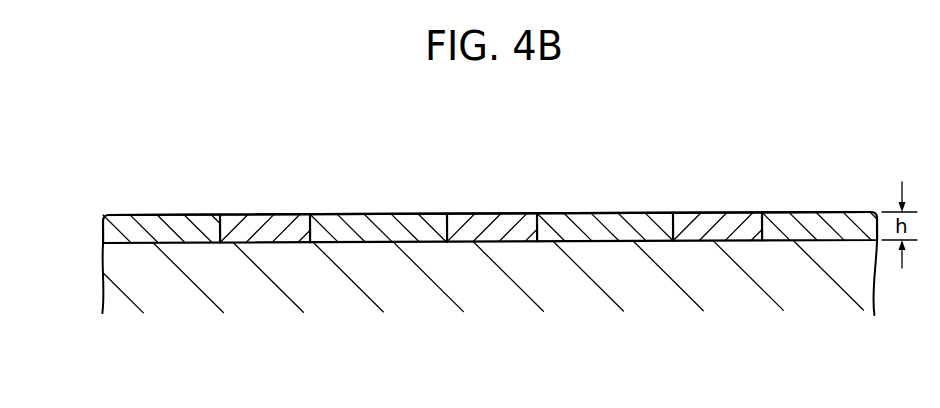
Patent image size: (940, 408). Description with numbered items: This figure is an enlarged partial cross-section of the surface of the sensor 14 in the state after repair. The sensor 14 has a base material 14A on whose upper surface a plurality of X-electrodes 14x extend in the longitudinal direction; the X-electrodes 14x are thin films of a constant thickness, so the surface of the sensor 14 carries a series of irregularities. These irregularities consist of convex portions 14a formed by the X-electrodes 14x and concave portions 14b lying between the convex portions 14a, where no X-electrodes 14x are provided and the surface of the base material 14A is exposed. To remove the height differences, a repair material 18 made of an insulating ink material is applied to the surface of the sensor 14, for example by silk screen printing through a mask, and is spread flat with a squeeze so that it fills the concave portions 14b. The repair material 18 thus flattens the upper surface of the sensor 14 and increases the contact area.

The sensor 14 is at (108, 100).
The base material 14A is at (123, 277).
The convex portions 14a is at (248, 201).
The concave portions 14b is at (143, 201).
The X-electrodes 14x is at (275, 223).
The repair material 18 is at (176, 222).